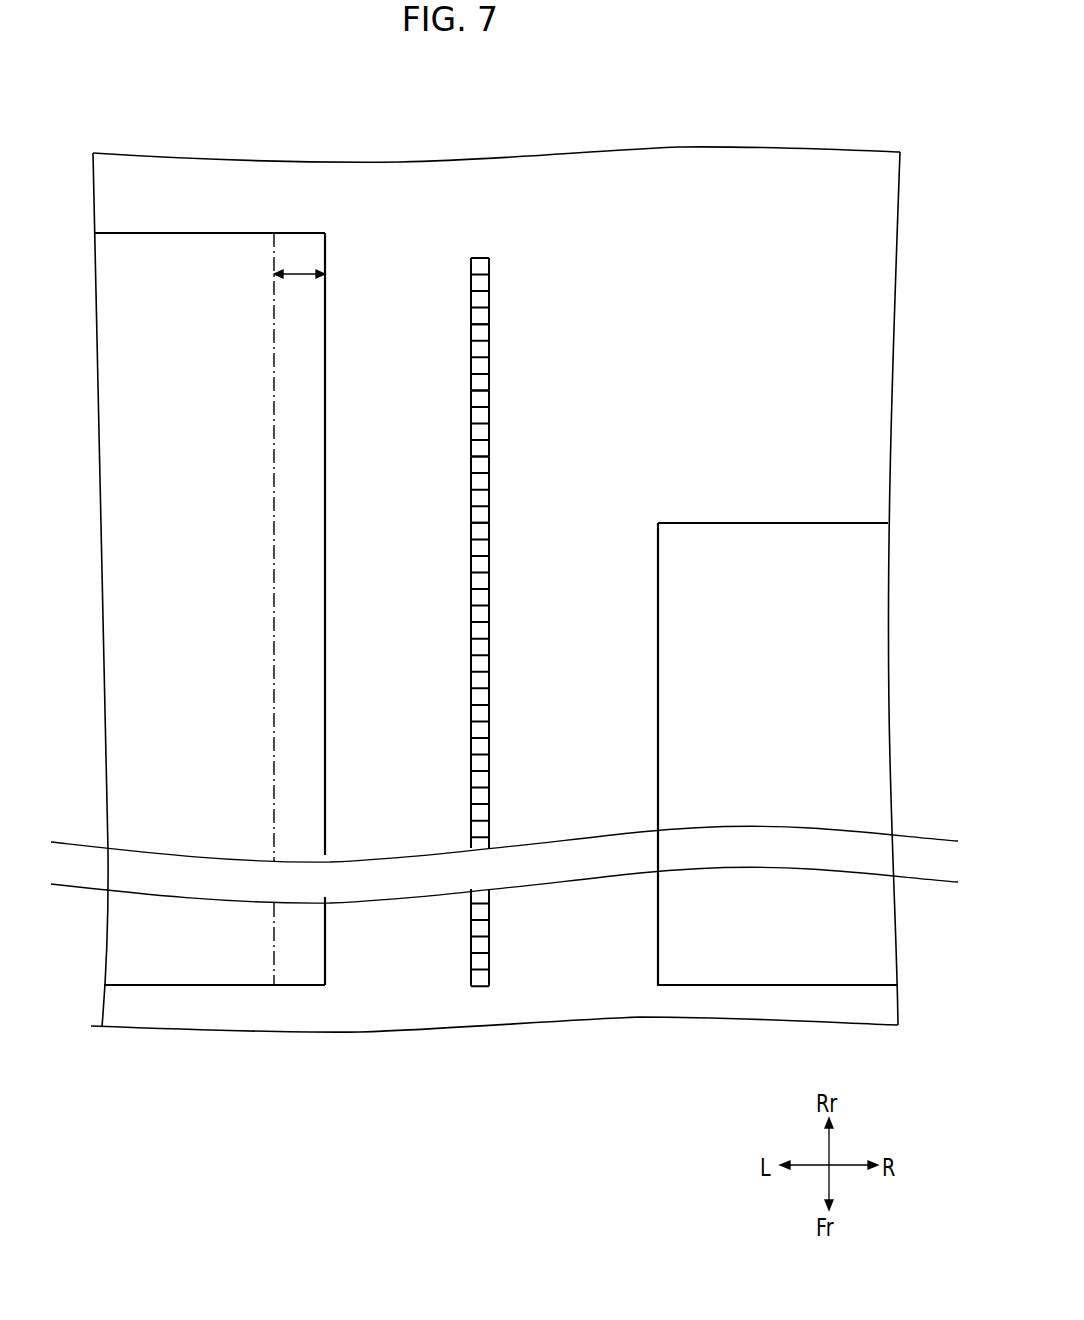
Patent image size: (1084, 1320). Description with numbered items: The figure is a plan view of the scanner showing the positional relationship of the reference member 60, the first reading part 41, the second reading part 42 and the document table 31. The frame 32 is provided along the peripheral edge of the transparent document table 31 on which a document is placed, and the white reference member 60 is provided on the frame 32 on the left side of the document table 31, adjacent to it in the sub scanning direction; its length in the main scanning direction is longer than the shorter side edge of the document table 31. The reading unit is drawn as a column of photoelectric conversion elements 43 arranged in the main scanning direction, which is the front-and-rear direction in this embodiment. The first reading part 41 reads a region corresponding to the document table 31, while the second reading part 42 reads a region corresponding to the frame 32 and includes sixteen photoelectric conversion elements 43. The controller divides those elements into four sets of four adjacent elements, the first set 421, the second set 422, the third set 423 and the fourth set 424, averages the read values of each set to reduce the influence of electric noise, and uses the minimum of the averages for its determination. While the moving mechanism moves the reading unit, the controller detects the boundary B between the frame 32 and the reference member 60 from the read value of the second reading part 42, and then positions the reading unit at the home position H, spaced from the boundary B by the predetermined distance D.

The frame 32 is at (703, 212).
The document table 31 is at (802, 522).
The reference member 60 is at (313, 232).
The boundary B is at (327, 255).
The home position H is at (274, 244).
The predetermined distance D is at (299, 287).
The photoelectric conversion element 43 is at (471, 264).
The second reading part 42 is at (544, 390).
The first set 421 is at (503, 258).
The second set 422 is at (503, 324).
The third set 423 is at (503, 390).
The fourth set 424 is at (514, 490).
The first reading part 41 is at (513, 524).